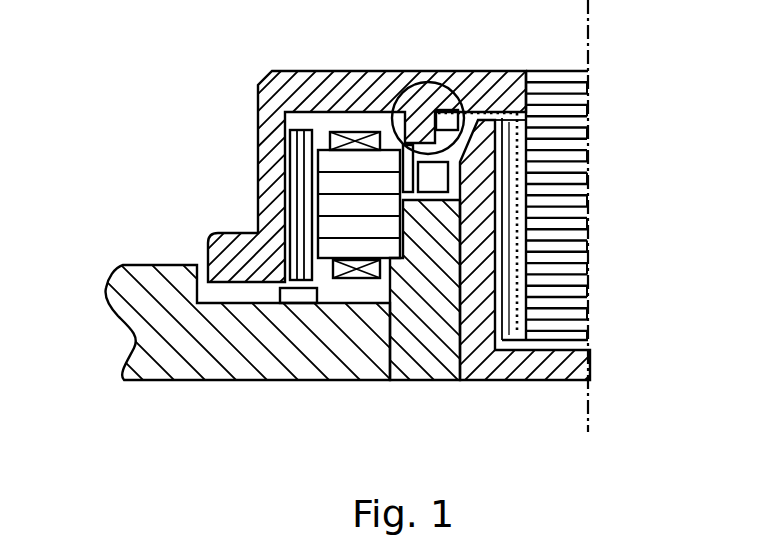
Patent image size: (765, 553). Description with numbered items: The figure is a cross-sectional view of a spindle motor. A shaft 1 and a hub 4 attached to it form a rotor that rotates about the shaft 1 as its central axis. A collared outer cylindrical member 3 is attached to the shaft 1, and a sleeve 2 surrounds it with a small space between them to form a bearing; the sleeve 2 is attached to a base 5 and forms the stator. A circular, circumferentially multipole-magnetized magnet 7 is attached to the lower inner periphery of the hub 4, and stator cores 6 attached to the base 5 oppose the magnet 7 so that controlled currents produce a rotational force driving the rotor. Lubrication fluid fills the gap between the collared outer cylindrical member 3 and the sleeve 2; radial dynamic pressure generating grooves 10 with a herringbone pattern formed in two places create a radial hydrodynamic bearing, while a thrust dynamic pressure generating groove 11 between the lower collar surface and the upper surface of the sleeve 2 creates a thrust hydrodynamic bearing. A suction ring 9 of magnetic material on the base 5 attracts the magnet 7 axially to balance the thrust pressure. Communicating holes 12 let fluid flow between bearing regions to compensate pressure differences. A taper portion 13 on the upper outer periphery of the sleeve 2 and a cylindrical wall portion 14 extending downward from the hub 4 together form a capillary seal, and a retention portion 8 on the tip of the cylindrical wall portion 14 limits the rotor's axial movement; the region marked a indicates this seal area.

The shaft 1 is at (560, 100).
The sleeve 2 is at (425, 265).
The collared outer cylindrical member 3 is at (568, 147).
The hub 4 is at (270, 147).
The base 5 is at (165, 356).
The stator cores 6 is at (366, 157).
The magnet 7 is at (290, 213).
The retention portion 8 is at (438, 176).
The suction ring 9 is at (293, 307).
The radial dynamic pressure generating grooves 10 is at (515, 42).
The thrust dynamic pressure generating groove 11 is at (447, 110).
The communicating holes 12 is at (478, 118).
The taper portion 13 is at (571, 70).
The cylindrical wall portion 14 is at (408, 143).
The magnetic fluid region a is at (412, 88).